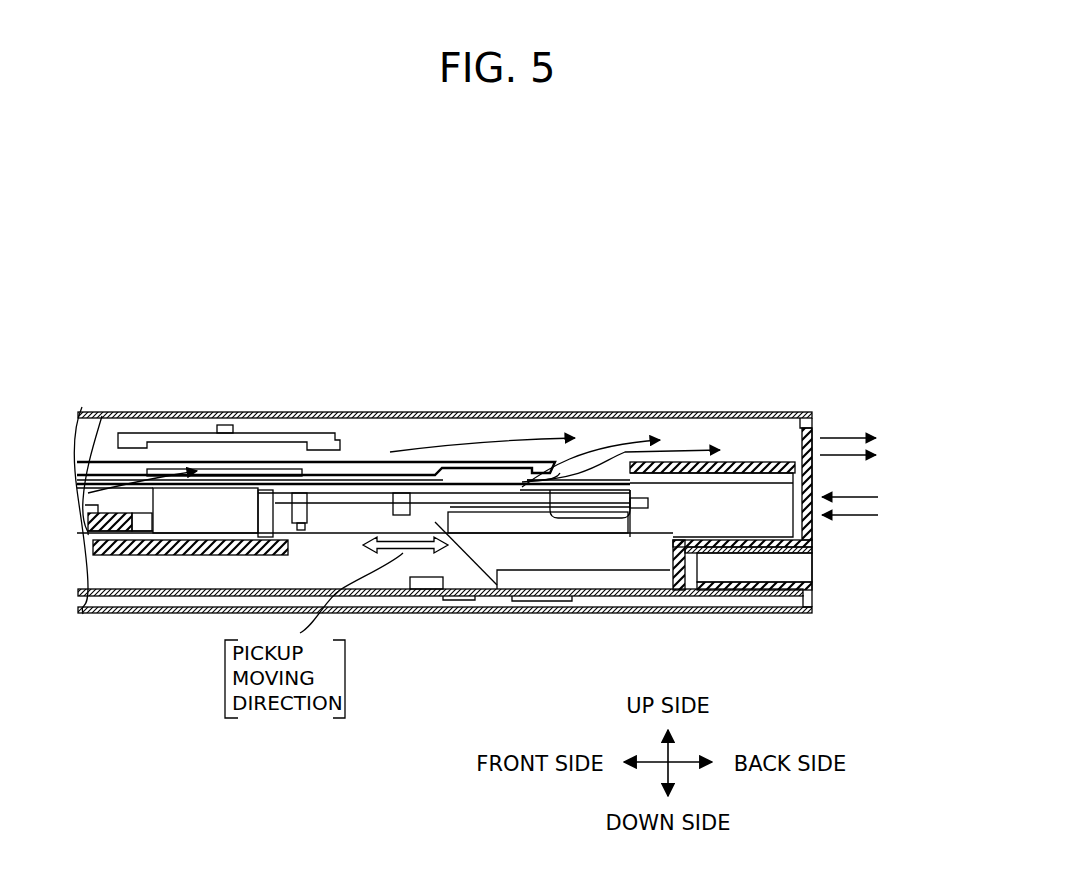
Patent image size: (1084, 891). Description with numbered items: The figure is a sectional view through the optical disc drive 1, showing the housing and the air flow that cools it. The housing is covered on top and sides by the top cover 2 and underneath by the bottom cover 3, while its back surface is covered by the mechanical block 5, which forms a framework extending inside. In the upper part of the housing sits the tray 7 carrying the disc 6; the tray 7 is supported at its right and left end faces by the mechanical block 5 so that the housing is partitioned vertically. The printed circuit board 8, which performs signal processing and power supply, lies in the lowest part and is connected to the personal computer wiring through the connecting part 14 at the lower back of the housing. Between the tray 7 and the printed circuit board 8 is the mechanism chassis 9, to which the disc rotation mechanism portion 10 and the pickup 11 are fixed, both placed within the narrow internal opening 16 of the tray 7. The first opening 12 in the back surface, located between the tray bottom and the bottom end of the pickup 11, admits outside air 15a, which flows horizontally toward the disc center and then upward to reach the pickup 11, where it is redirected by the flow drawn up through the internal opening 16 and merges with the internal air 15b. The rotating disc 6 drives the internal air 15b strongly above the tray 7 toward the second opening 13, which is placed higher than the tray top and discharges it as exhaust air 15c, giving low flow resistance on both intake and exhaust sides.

The optical disc drive 1 is at (472, 285).
The top cover 2 is at (610, 412).
The bottom cover 3 is at (101, 614).
The mechanical block 5 is at (757, 537).
The disc 6 is at (377, 462).
The tray 7 is at (735, 490).
The printed circuit board 8 is at (530, 598).
The mechanism chassis 9 is at (103, 517).
The disc rotation mechanism portion 10 is at (208, 507).
The pickup 11 is at (510, 597).
The first opening 12 is at (788, 572).
The second opening 13 is at (808, 445).
The connecting part 14 is at (812, 582).
The outside air 15a is at (861, 525).
The internal air 15b is at (608, 450).
The exhaust air 15c is at (859, 462).
The internal opening 16 is at (590, 518).